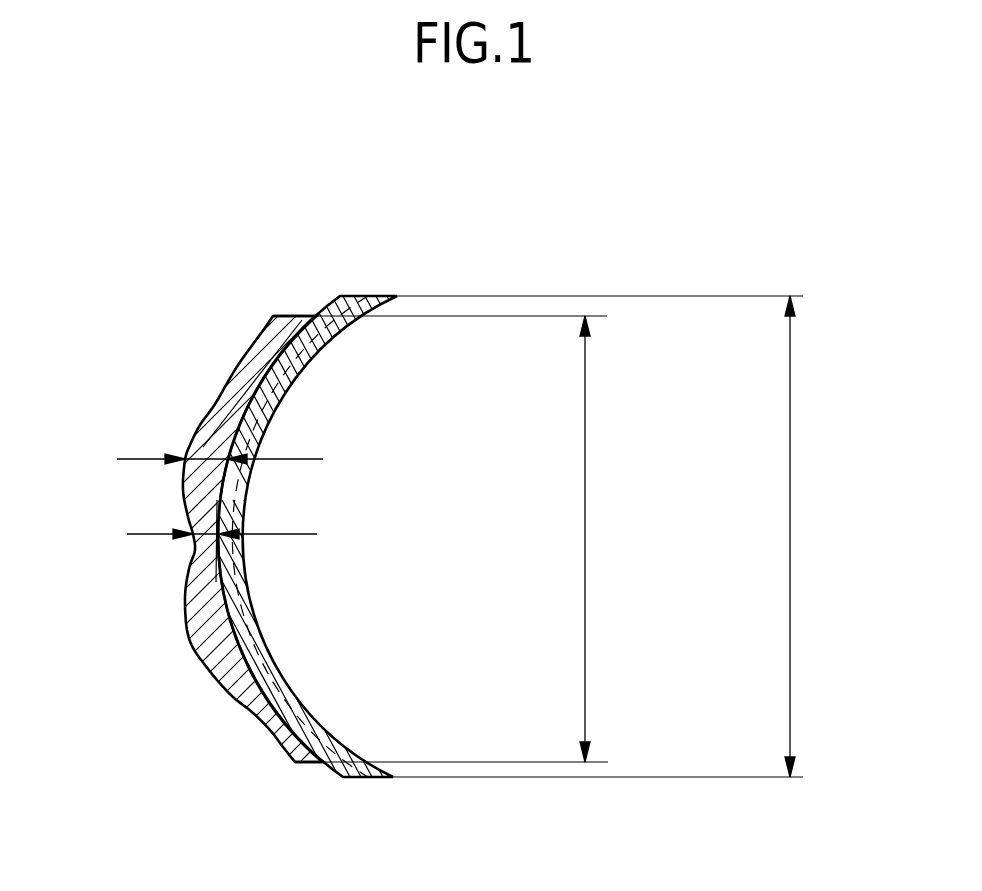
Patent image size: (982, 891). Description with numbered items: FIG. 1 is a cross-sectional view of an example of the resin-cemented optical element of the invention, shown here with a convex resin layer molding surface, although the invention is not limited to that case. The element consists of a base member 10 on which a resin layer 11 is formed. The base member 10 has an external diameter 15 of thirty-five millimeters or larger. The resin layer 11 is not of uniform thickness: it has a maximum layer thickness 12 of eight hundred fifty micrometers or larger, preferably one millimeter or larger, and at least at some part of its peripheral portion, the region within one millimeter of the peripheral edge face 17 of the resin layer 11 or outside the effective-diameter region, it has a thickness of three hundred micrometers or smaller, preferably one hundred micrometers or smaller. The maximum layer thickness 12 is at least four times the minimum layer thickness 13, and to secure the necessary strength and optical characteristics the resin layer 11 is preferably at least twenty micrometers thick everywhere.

The base member 10 is at (358, 296).
The resin layer 11 is at (264, 333).
The maximum layer thickness 12 is at (203, 453).
The minimum layer thickness 13 is at (205, 527).
The external diameter 15 is at (790, 528).
The peripheral edge face 17 is at (295, 314).